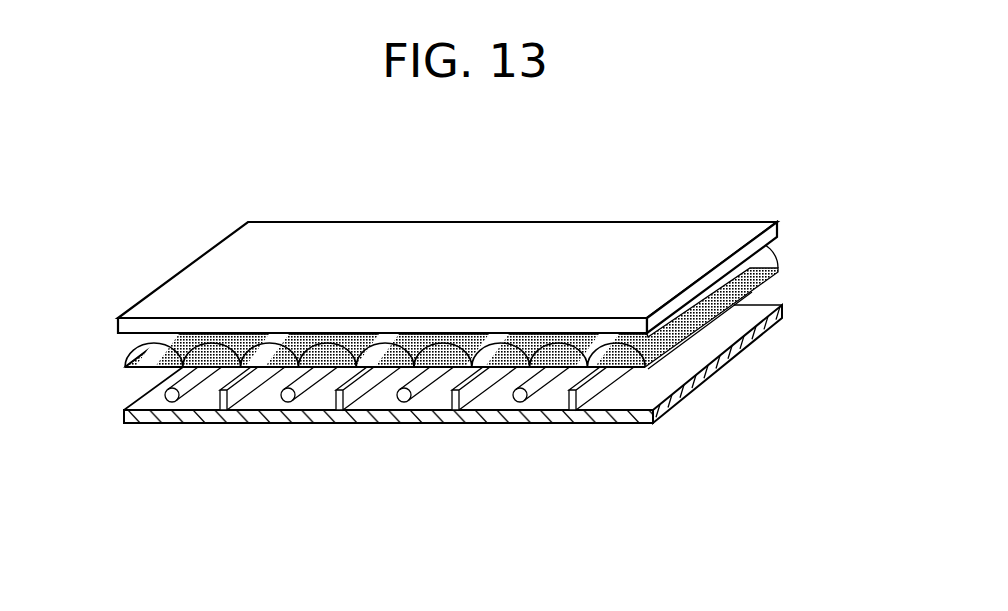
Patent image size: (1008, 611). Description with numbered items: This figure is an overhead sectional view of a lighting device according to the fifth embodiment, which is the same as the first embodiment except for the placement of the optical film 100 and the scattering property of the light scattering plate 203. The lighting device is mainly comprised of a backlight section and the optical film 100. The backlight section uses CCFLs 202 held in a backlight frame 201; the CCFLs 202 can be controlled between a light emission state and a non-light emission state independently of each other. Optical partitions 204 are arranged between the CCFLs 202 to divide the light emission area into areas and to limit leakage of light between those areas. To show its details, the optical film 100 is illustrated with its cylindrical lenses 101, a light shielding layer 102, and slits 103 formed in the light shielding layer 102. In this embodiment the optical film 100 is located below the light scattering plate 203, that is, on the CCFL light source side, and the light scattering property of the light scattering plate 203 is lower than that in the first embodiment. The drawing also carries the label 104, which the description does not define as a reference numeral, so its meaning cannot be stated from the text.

The optical film 100 is at (108, 340).
The cylindrical lenses 101 is at (124, 345).
The light shielding layer 102 is at (197, 347).
The slits 103 is at (276, 362).
The light guide 104 is at (336, 357).
The backlight frame 201 is at (425, 422).
The CCFLs 202 is at (515, 402).
The light scattering plate 203 is at (779, 229).
The optical partitions 204 is at (567, 411).